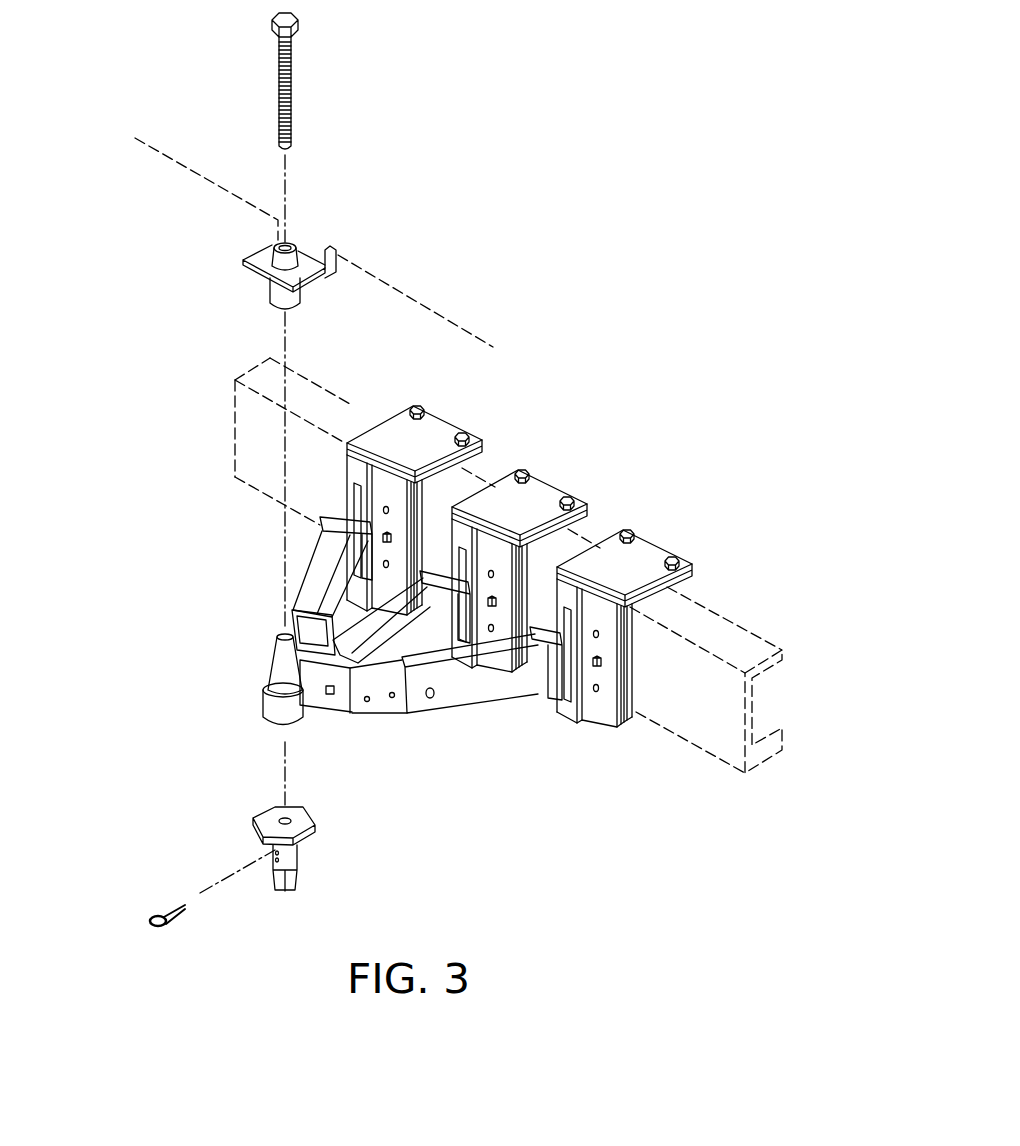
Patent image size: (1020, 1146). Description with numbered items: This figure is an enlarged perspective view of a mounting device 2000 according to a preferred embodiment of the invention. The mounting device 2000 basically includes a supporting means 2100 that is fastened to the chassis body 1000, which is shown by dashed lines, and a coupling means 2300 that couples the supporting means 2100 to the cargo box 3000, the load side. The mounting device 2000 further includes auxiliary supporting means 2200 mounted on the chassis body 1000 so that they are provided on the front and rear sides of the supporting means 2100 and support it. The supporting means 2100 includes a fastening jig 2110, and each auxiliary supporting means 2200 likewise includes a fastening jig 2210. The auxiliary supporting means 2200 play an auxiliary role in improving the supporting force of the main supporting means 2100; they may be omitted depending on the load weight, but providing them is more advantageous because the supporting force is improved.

The chassis body 1000 is at (675, 731).
The mounting device 2000 is at (146, 94).
The supporting means 2100 is at (576, 472).
The fastening jig 2110 is at (552, 494).
The auxiliary supporting means 2200 is at (479, 409).
The fastening jig 2210 is at (393, 432).
The coupling means 2300 is at (183, 908).
The cargo box 3000 is at (433, 308).